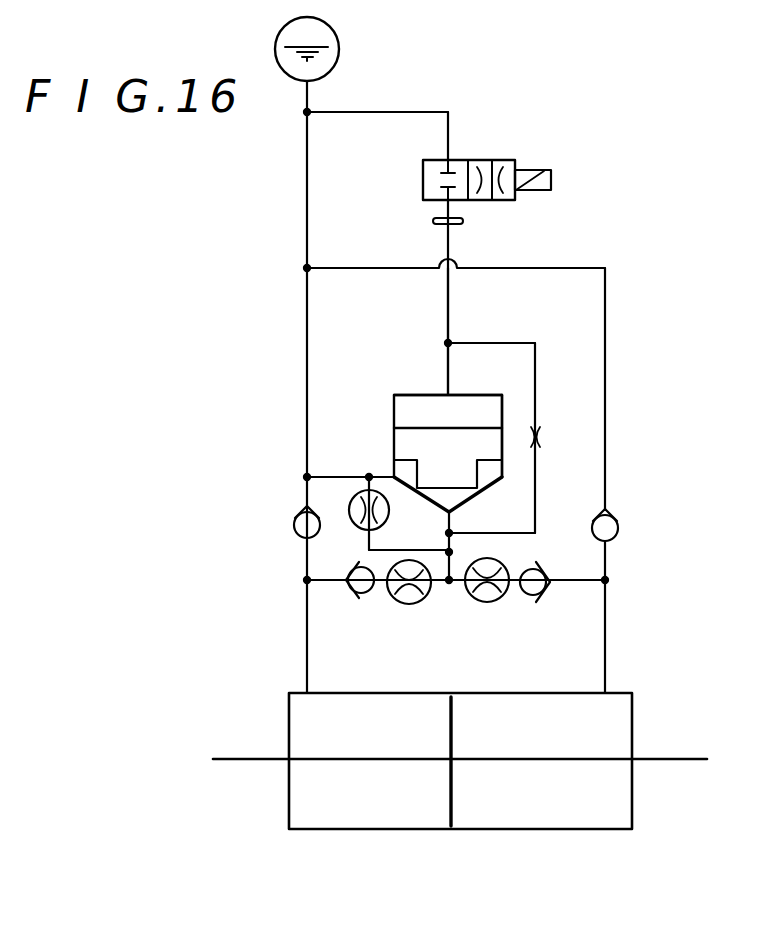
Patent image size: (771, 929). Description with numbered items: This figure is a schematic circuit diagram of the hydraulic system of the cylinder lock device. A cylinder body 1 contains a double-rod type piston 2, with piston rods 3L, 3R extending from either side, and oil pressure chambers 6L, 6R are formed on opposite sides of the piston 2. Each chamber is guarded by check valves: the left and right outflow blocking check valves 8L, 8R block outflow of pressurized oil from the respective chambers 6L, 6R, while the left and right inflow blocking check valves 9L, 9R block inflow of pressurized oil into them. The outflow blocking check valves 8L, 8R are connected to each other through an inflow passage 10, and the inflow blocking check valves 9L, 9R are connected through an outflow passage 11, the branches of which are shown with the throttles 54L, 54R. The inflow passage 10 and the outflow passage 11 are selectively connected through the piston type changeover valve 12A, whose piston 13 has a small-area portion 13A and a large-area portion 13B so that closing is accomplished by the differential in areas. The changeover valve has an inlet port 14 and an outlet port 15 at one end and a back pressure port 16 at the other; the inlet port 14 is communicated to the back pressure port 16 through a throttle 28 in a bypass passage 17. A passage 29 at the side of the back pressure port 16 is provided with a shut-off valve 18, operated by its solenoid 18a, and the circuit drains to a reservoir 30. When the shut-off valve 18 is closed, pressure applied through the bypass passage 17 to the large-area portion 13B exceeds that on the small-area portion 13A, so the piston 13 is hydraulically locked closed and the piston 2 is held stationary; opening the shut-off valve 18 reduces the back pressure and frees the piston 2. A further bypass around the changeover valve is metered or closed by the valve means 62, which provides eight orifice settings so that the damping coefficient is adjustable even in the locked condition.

The reservoir tank 30 is at (277, 43).
The shut-off valve 18 is at (485, 160).
The solenoid 18a is at (545, 170).
The inflow passage 10 is at (590, 268).
The passage 29 is at (451, 322).
The back pressure port 16 is at (446, 395).
The large-area portion 13B is at (412, 425).
The piston 13 is at (407, 442).
The small-area portion 13A is at (510, 470).
The outlet port 15 is at (392, 474).
The bypass passage 17 is at (535, 350).
The piston type changeover valve 12A is at (502, 400).
The throttle 28 is at (542, 440).
The inlet port 14 is at (452, 510).
The valve means 62 is at (388, 516).
The left outflow blocking check valve 8L is at (296, 518).
The right outflow blocking check valve 8R is at (618, 521).
The outflow passage 11 is at (454, 586).
The left inflow blocking check valve 9L is at (357, 598).
The right inflow blocking check valve 9R is at (556, 598).
The left throttle 54L is at (414, 604).
The right throttle 54R is at (497, 602).
The cylinder body 1 is at (306, 830).
The piston 2 is at (452, 813).
The left piston rod 3L is at (234, 757).
The right piston rod 3R is at (690, 757).
The left oil pressure chamber 6L is at (378, 815).
The right oil pressure chamber 6R is at (602, 819).